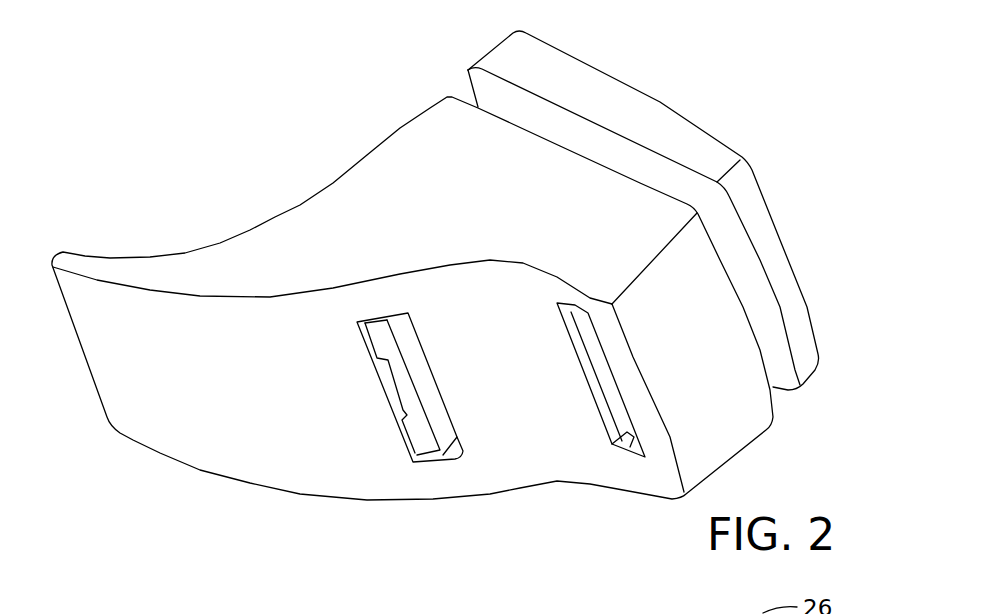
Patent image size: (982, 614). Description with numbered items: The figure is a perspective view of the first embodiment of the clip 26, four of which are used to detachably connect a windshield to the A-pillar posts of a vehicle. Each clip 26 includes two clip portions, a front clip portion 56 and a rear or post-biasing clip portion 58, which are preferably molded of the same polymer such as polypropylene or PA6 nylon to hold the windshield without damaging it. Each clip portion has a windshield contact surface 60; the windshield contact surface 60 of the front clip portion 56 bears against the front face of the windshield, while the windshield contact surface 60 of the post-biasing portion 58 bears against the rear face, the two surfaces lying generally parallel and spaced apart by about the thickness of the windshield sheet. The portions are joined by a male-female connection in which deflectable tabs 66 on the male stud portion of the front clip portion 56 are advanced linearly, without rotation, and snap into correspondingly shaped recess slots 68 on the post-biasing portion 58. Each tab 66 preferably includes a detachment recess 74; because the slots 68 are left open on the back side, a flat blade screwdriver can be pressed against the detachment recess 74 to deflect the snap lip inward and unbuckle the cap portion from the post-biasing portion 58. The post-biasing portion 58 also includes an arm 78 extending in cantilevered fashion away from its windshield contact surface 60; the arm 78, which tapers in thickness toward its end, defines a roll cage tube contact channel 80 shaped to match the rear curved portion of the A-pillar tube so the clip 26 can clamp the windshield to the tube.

The clip 26 is at (453, 292).
The front clip portion 56 is at (603, 204).
The rear clip portion 58 is at (412, 334).
The windshield contact surface 60 is at (485, 87).
The deflectable tab 66 is at (437, 437).
The recess slot 68 is at (453, 454).
The detachment recess 74 is at (395, 397).
The arm 78 is at (177, 392).
The roll cage tube contact channel 80 is at (218, 243).